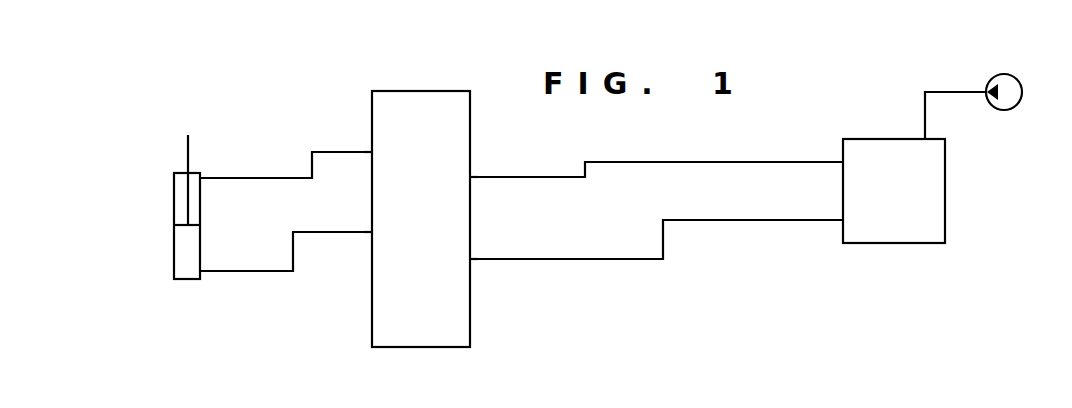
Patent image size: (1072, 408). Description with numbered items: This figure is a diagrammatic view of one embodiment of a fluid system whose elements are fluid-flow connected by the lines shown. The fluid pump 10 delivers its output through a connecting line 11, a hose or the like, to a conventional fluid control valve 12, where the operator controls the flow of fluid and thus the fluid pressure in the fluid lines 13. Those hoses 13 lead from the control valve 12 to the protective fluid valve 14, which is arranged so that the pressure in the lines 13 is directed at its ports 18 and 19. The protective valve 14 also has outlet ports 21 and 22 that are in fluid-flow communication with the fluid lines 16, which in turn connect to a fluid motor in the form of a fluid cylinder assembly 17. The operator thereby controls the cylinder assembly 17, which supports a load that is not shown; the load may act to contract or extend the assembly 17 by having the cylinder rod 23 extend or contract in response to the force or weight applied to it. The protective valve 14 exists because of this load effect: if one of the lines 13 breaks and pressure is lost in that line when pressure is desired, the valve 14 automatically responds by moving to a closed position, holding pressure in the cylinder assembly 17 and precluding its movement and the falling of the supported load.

The fluid pump 10 is at (1017, 79).
The connecting line 11 is at (925, 103).
The fluid control valve 12 is at (945, 177).
The fluid lines 13 is at (633, 163).
The protective fluid valve 14 is at (462, 133).
The fluid lines 16 is at (267, 180).
The fluid cylinder assembly 17 is at (180, 258).
The port 18 is at (471, 176).
The port 19 is at (471, 261).
The outlet port 21 is at (370, 156).
The outlet port 22 is at (370, 230).
The cylinder rod 23 is at (188, 152).